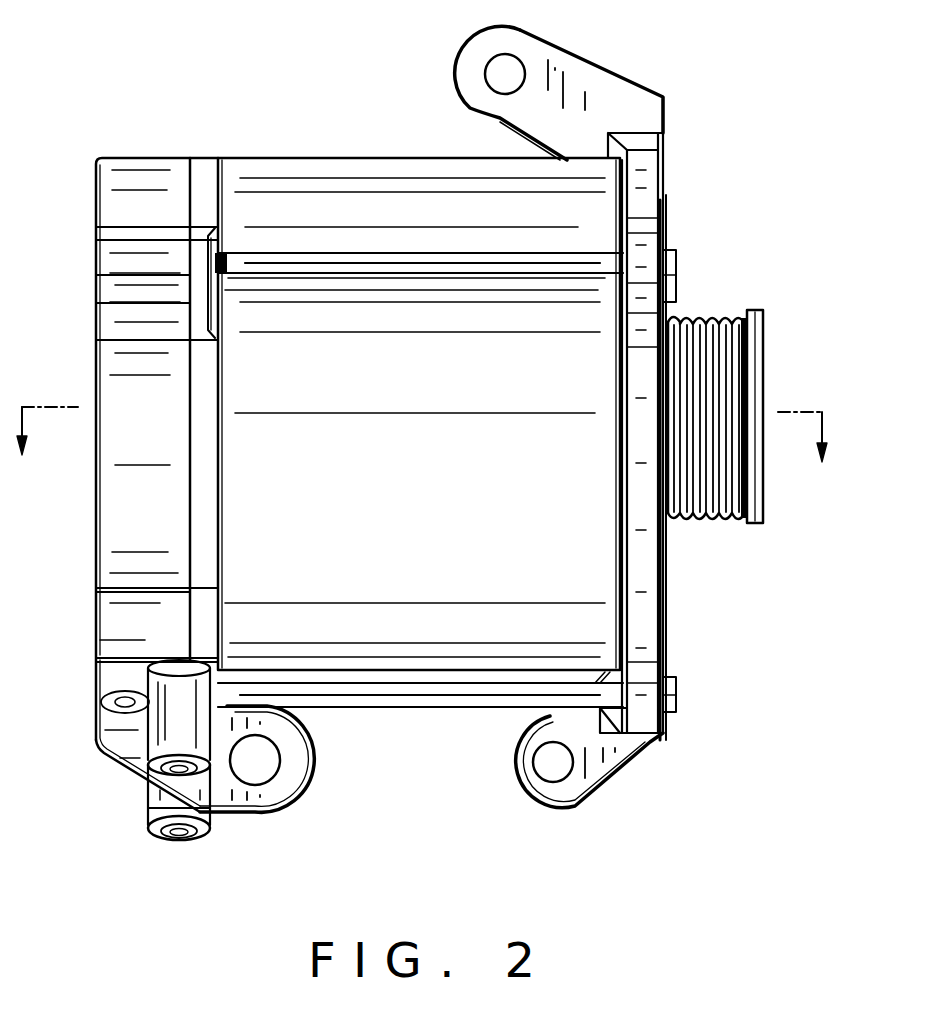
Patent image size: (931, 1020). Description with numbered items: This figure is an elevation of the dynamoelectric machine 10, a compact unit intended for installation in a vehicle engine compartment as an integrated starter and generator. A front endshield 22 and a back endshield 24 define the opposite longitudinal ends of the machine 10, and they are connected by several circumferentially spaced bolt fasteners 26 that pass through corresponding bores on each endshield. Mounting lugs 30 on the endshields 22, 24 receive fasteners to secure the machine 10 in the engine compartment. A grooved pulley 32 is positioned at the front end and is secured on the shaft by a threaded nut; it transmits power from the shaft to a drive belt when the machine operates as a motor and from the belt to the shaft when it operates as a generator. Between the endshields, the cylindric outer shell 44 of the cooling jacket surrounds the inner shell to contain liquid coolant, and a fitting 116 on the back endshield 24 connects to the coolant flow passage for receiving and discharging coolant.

The dynamoelectric machine 10 is at (693, 100).
The front endshield 22 is at (617, 515).
The back endshield 24 is at (217, 473).
The bolt fasteners 26 is at (367, 278).
The mounting lugs 30 is at (458, 70).
The grooved pulley 32 is at (716, 322).
The outer shell 44 is at (333, 157).
The fittings 116 is at (147, 800).